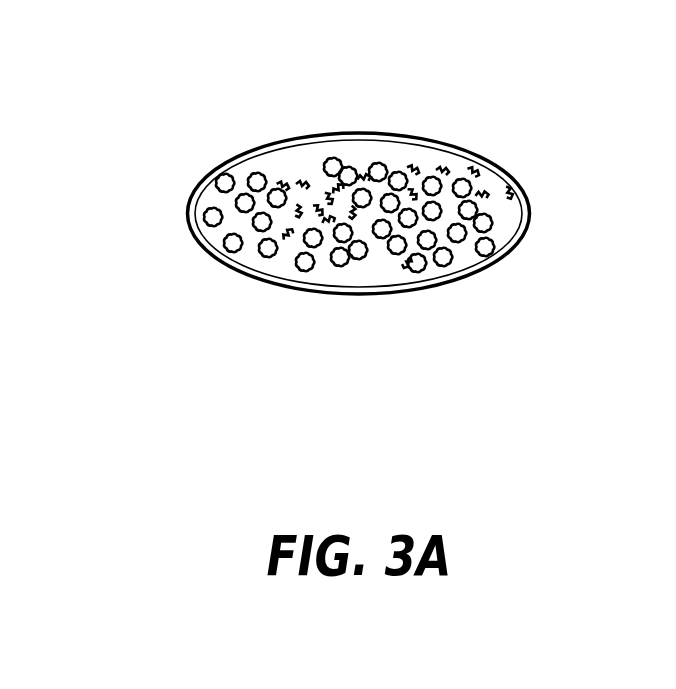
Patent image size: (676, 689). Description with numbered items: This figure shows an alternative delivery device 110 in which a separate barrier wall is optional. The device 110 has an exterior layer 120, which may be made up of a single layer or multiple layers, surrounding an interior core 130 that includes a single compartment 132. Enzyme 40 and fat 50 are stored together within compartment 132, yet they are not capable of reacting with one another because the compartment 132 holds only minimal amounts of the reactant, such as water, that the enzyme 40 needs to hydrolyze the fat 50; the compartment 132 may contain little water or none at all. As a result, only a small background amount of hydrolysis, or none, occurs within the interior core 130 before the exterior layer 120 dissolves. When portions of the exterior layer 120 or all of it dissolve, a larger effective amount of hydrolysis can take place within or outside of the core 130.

The device 110 is at (290, 179).
The exterior layer 120 is at (295, 102).
The interior core 130 is at (321, 137).
The compartment 132 is at (332, 273).
The fat 50 is at (240, 182).
The enzyme 40 is at (441, 166).